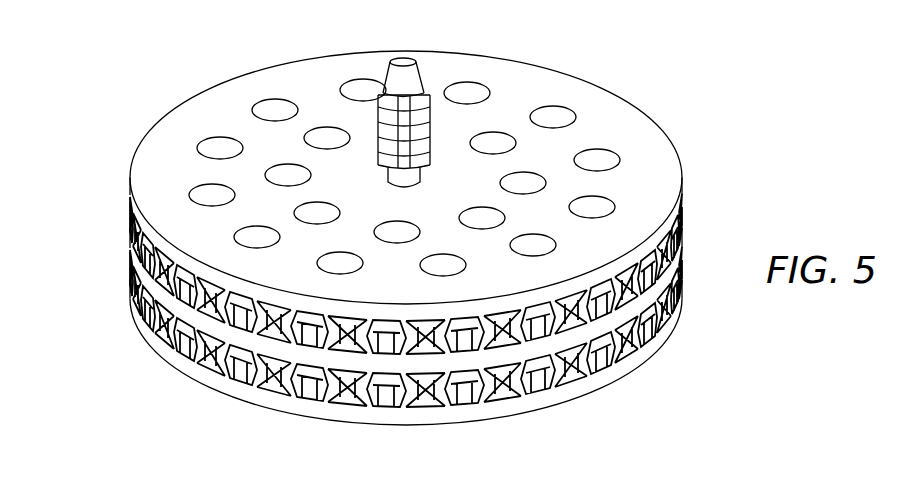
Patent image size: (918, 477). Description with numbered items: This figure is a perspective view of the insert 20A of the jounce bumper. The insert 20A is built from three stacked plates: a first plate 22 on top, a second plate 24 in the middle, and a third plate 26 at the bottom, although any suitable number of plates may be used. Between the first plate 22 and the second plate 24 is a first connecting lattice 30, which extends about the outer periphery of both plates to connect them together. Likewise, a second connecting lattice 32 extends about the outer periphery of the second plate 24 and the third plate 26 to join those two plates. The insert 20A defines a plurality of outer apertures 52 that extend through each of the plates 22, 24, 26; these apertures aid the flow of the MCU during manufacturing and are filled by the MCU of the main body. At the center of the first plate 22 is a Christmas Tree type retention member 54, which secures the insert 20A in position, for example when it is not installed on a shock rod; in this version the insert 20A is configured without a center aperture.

The insert 20A is at (105, 140).
The first plate 22 is at (680, 226).
The second plate 24 is at (680, 283).
The third plate 26 is at (638, 357).
The first connecting lattice 30 is at (263, 330).
The second connecting lattice 32 is at (170, 330).
The outer apertures 52 is at (276, 106).
The retention member 54 is at (383, 118).